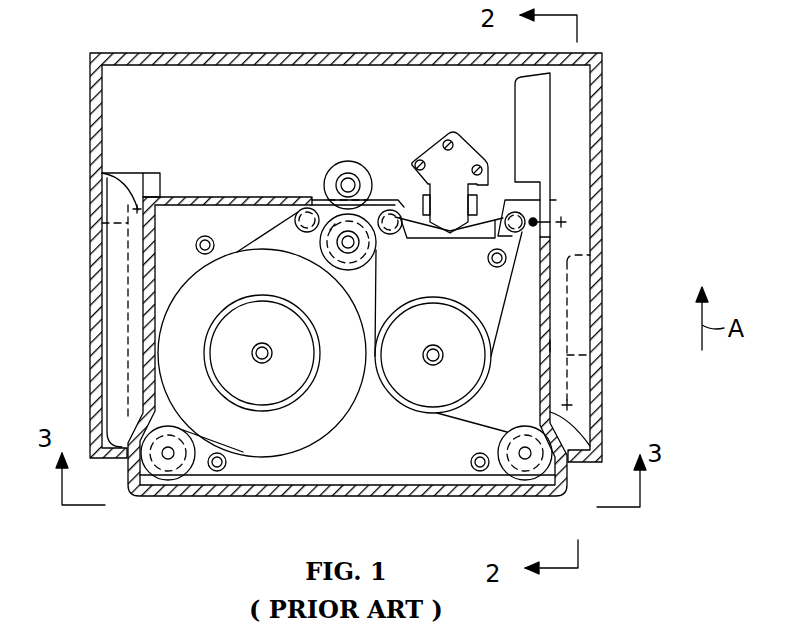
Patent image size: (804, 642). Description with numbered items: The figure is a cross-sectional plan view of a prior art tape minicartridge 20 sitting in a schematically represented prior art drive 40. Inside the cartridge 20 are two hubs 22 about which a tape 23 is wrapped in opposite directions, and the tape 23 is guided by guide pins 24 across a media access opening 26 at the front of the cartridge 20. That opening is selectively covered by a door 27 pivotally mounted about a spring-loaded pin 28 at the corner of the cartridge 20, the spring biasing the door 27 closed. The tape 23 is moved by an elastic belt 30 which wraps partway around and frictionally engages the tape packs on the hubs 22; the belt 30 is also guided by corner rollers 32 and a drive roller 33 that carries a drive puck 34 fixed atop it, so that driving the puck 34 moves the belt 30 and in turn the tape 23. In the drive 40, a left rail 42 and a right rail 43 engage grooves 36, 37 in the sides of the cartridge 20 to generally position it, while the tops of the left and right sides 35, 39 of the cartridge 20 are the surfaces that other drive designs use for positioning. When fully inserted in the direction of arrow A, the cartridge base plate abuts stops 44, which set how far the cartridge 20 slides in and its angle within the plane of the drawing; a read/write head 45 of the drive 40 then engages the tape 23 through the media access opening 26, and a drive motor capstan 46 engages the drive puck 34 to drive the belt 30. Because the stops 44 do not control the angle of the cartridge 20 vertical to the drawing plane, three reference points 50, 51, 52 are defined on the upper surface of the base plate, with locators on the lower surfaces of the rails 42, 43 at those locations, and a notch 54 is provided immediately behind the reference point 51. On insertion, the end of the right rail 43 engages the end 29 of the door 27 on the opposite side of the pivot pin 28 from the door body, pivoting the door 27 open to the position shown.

The cartridge 20 is at (258, 502).
The hubs 22 is at (249, 394).
The tape 23 is at (253, 241).
The guide pins 24 is at (300, 209).
The media access opening 26 is at (492, 240).
The door 27 is at (526, 92).
The pin 28 is at (538, 216).
The end of the door 29 is at (553, 240).
The elastic belt 30 is at (421, 474).
The corner rollers 32 is at (165, 460).
The drive roller 33 is at (335, 224).
The drive puck 34 is at (374, 241).
The left side 35 is at (100, 236).
The groove 36 is at (146, 258).
The groove 37 is at (551, 346).
The right side 39 is at (592, 357).
The drive 40 is at (183, 46).
The left rail 42 is at (108, 300).
The right rail 43 is at (583, 305).
The stops 44 is at (157, 180).
The read/write head 45 is at (440, 207).
The drive motor capstan 46 is at (344, 162).
The reference point 50 is at (136, 207).
The reference point 51 is at (556, 204).
The reference point 52 is at (562, 408).
The notch 54 is at (600, 252).